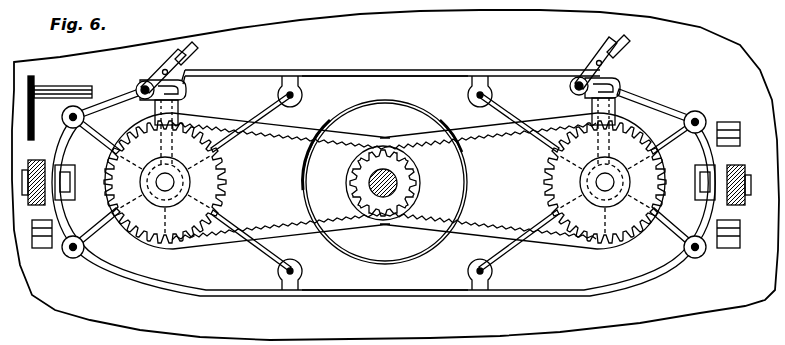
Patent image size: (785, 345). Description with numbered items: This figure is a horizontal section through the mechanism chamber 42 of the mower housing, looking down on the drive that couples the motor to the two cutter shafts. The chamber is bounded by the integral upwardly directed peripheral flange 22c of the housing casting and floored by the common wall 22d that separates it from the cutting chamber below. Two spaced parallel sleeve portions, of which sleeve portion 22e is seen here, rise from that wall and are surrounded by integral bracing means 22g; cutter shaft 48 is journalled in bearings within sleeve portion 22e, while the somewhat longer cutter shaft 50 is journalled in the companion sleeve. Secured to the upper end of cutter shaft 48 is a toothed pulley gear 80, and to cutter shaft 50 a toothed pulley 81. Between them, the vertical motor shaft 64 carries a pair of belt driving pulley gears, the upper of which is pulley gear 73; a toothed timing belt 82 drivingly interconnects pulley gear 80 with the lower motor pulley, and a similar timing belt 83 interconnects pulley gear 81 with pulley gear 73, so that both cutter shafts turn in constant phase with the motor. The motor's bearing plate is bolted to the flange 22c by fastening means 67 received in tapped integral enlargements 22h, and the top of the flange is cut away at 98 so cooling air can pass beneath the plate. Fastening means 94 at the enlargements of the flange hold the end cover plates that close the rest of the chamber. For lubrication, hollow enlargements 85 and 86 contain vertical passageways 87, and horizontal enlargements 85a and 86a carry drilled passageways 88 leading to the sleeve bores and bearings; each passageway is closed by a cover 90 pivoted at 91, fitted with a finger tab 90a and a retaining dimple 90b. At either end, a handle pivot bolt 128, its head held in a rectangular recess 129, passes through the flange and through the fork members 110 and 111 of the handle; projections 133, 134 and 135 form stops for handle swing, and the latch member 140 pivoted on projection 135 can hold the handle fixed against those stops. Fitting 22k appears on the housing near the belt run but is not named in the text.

The latch member 140 is at (16, 66).
The mechanism chamber 42 is at (208, 272).
The cutaway portion 98 is at (416, 72).
The lug 22k is at (300, 96).
The integral enlargements 22h is at (470, 96).
The fastening means 67 is at (290, 92).
The timing belt 82 is at (288, 131).
The timing belt 83 is at (498, 142).
The toothed pulley 81 is at (676, 140).
The fastening means 94 is at (84, 117).
The motor shaft 64 is at (392, 165).
The peripheral flange 22c is at (347, 72).
The toothed pulley gear 80 is at (225, 170).
The sleeve portion 22e is at (232, 183).
The cutter shaft 48 is at (165, 188).
The common wall 22d is at (246, 214).
The bracing means 22g is at (225, 252).
The cutter shaft 50 is at (605, 190).
The pulley gear 73 is at (400, 182).
The hollow enlargement 85 is at (188, 90).
The horizontal enlargement 85a is at (180, 110).
The passageway 88 is at (158, 111).
The hollow enlargement 86 is at (622, 92).
The horizontal enlargement 86a is at (616, 110).
The pivot 91 is at (142, 88).
The cover 90 is at (162, 70).
The dimple 90b is at (192, 52).
The flange portion 90a is at (180, 48).
The passageway 87 is at (185, 76).
The projection 135 is at (45, 92).
The fork member 111 is at (23, 173).
The handle pivot bolt 128 is at (698, 192).
The rectangular recess 129 is at (389, 222).
The projection 133 is at (45, 248).
The projection 134 is at (728, 122).
The fork member 110 is at (738, 166).